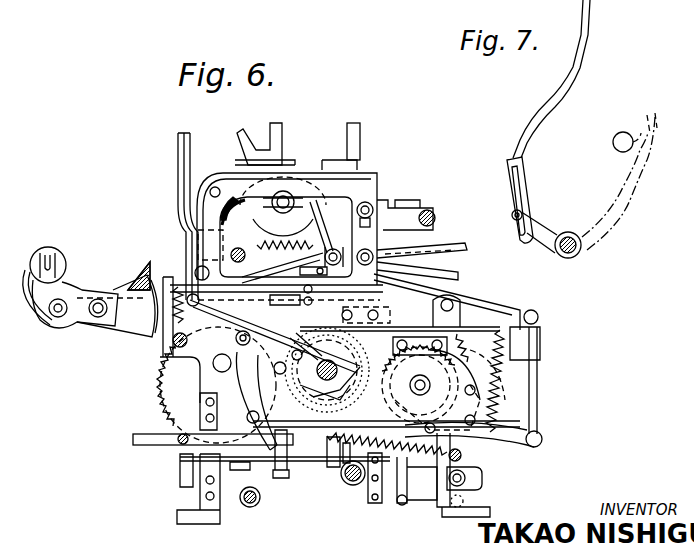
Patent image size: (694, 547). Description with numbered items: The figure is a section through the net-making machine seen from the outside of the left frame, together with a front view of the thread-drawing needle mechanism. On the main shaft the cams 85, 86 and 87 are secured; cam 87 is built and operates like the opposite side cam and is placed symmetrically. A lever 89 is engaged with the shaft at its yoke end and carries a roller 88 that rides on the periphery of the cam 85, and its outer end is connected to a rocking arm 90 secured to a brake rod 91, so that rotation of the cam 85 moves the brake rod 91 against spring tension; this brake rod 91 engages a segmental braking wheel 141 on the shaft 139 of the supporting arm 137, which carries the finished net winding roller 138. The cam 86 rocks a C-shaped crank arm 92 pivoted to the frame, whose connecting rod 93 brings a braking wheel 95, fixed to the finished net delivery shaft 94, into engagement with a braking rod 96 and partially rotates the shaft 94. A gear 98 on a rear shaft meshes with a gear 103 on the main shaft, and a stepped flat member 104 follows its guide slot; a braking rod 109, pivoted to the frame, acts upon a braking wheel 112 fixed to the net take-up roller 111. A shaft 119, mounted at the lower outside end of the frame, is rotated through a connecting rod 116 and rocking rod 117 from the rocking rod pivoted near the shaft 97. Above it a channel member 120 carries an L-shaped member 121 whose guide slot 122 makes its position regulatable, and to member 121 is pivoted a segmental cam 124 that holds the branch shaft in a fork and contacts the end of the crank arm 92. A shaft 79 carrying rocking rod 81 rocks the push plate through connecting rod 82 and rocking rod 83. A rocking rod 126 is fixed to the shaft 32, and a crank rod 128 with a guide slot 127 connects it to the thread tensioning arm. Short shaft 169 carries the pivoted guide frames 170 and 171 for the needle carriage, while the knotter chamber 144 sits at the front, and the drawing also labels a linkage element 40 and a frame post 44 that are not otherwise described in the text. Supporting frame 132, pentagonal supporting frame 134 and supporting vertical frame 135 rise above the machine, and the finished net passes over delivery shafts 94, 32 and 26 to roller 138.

In FIG. 6, the finished net delivery shaft 26 is at (246, 507).
In FIG. 6, the shaft 32 is at (400, 500).
In FIG. 7, the shaft 32 is at (567, 233).
In FIG. 6, the lever arm 40 is at (508, 440).
In FIG. 6, the link post 44 is at (540, 410).
In FIG. 6, the shaft 79 is at (480, 480).
In FIG. 6, the rocking rod 81 is at (470, 496).
In FIG. 6, the connecting rod 82 is at (447, 488).
In FIG. 6, the rocking rod 83 is at (448, 460).
In FIG. 6, the cam 85 is at (328, 467).
In FIG. 6, the cam 86 is at (360, 483).
In FIG. 6, the cam 87 is at (303, 467).
In FIG. 6, the roller 88 is at (297, 331).
In FIG. 6, the lever 89 is at (157, 347).
In FIG. 6, the rocking arm 90 is at (178, 278).
In FIG. 6, the brake rod 91 is at (163, 277).
In FIG. 6, the C-shaped crank arm 92 is at (200, 380).
In FIG. 6, the connecting rod 93 is at (437, 493).
In FIG. 6, the finished net delivery shaft 94 is at (520, 393).
In FIG. 6, the braking wheel 95 is at (525, 378).
In FIG. 6, the braking rod 96 is at (507, 395).
In FIG. 6, the shaft 97 is at (213, 365).
In FIG. 6, the gear 98 is at (200, 392).
In FIG. 6, the gear 103 is at (365, 352).
In FIG. 6, the stepped flat member 104 is at (400, 262).
In FIG. 6, the braking rod 109 is at (336, 249).
In FIG. 6, the net take-up roller 111 is at (318, 181).
In FIG. 6, the braking wheel 112 is at (232, 212).
In FIG. 6, the connecting rod 116 is at (178, 471).
In FIG. 6, the rocking rod 117 is at (190, 485).
In FIG. 6, the shaft 119 is at (240, 462).
In FIG. 6, the channel member 120 is at (178, 451).
In FIG. 6, the L-shaped member 121 is at (135, 439).
In FIG. 6, the guide slot 122 is at (172, 437).
In FIG. 6, the segmental cam 124 is at (283, 477).
In FIG. 7, the rocking rod 126 is at (538, 225).
In FIG. 7, the guide slot 127 is at (517, 172).
In FIG. 7, the crank rod 128 is at (583, 28).
In FIG. 6, the supporting frame 132 is at (358, 148).
In FIG. 6, the pentagonal supporting frame 134 is at (285, 145).
In FIG. 6, the supporting vertical frame 135 is at (187, 168).
In FIG. 6, the supporting arm 137 is at (70, 318).
In FIG. 6, the finished net winding roller 138 is at (66, 280).
In FIG. 6, the shaft 139 is at (98, 318).
In FIG. 6, the segmental braking wheel 141 is at (117, 290).
In FIG. 6, the knotter chamber 144 is at (418, 200).
In FIG. 6, the short shaft 169 is at (376, 217).
In FIG. 6, the guide frame 170 is at (450, 246).
In FIG. 6, the guide frame 171 is at (445, 239).